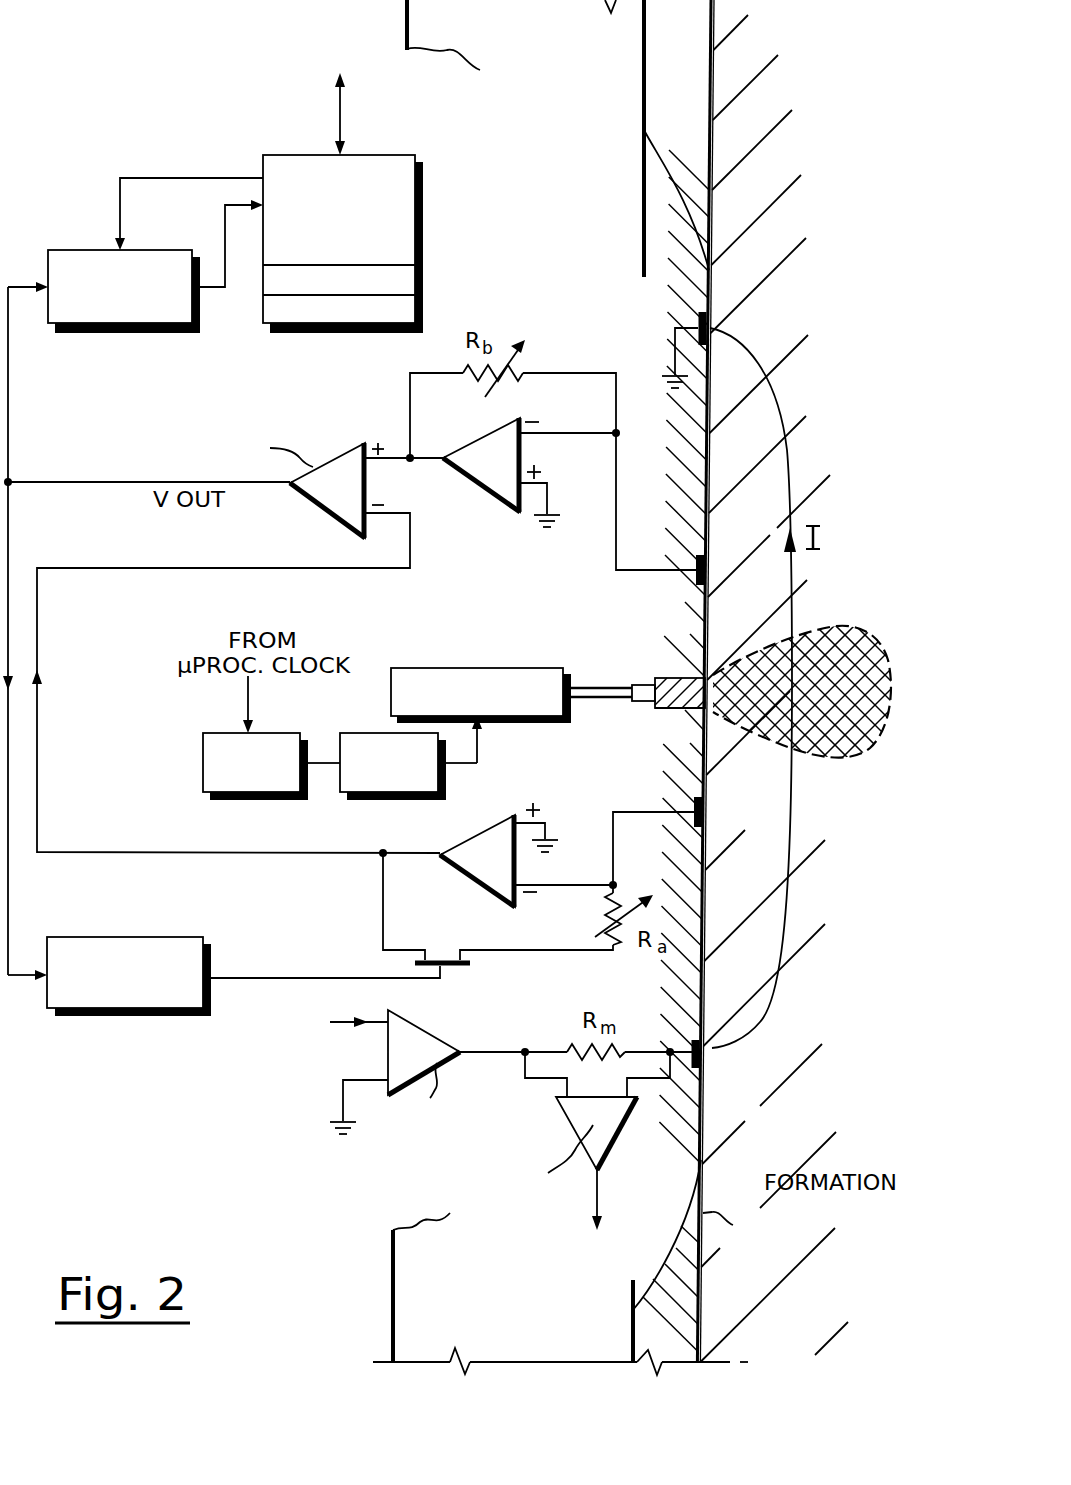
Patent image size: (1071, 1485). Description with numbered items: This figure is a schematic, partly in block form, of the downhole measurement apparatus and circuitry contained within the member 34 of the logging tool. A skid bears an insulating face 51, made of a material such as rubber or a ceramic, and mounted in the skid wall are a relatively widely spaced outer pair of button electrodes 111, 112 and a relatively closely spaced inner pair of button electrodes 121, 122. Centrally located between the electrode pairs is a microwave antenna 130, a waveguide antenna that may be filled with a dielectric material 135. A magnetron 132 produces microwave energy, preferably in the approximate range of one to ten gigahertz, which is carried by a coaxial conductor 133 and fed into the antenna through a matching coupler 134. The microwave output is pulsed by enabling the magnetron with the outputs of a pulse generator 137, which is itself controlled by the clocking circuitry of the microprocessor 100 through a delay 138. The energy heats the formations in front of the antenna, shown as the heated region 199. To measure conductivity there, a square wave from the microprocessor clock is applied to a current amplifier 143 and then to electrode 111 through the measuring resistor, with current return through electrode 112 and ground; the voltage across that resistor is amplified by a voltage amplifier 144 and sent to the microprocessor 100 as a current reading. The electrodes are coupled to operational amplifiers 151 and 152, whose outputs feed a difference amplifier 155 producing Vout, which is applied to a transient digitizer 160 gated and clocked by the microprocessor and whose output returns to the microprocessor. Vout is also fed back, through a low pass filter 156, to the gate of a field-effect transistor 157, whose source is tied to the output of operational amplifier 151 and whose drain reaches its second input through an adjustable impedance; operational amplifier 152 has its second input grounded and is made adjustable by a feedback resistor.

The member 34 is at (407, 27).
The insulating face 51 is at (667, 160).
The microprocessor 100 is at (262, 160).
The transient digitizer 160 is at (78, 250).
The electrode 112 is at (708, 322).
The difference amplifier 155 is at (330, 470).
The operational amplifier 152 is at (460, 482).
The electrode 122 is at (705, 568).
The magnetron 132 is at (500, 668).
The coaxial conductor 133 is at (598, 705).
The matching coupler 134 is at (647, 685).
The microwave antenna 130 is at (685, 678).
The dielectric material 135 is at (675, 720).
The delay 138 is at (202, 735).
The pulse generator 137 is at (348, 733).
The operational amplifier 151 is at (513, 820).
The electrode 121 is at (705, 806).
The heated region 199 is at (852, 755).
The low pass filter 156 is at (204, 937).
The field-effect transistor 157 is at (443, 950).
The current amplifier 143 is at (423, 1030).
The voltage amplifier 144 is at (568, 1107).
The electrode 111 is at (704, 1068).